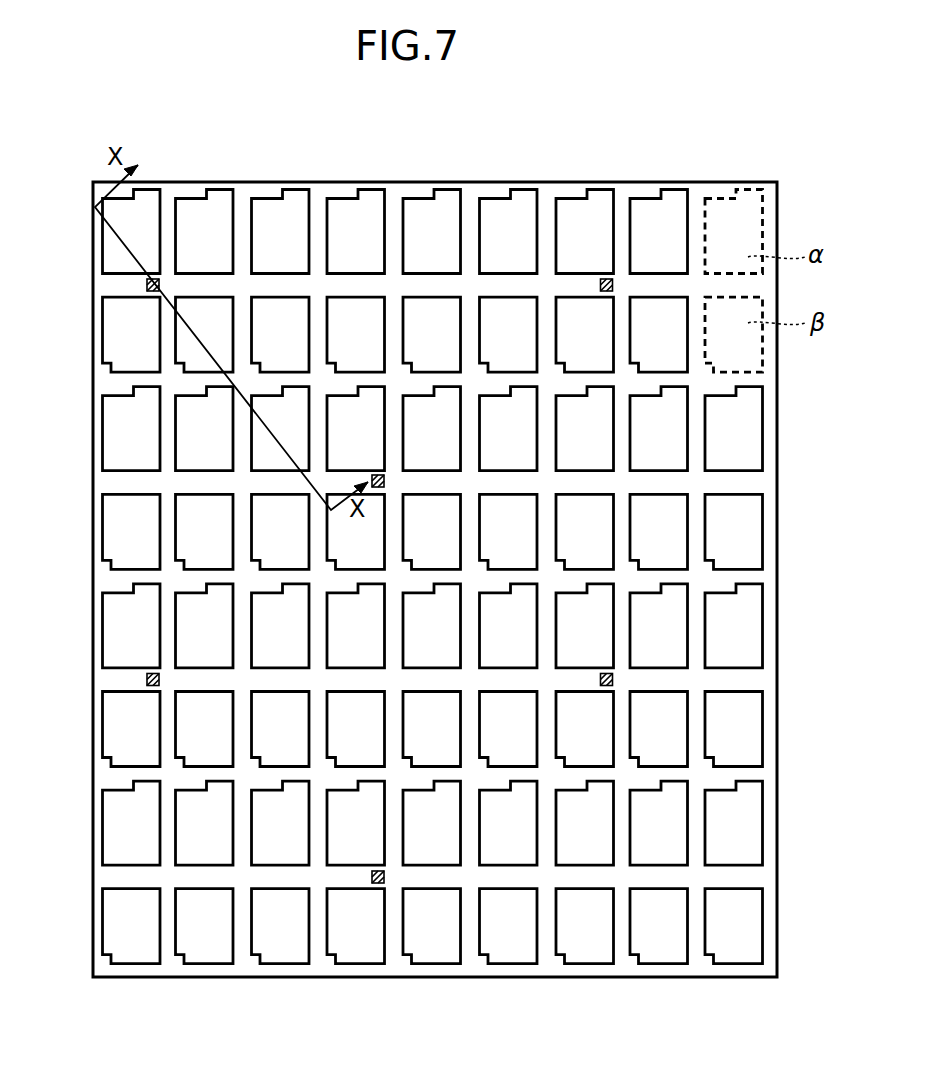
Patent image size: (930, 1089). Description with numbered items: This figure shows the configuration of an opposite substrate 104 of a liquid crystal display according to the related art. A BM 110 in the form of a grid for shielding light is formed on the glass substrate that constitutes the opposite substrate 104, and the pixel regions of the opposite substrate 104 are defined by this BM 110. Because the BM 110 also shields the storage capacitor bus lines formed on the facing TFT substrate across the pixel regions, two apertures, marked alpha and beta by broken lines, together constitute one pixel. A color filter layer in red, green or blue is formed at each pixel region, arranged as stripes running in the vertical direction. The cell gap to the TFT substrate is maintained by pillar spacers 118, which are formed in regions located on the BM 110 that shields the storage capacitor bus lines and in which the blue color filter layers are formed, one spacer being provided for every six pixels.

The opposite substrate 104 is at (73, 409).
The BM 110 is at (242, 200).
The pillar spacers 118 is at (159, 287).